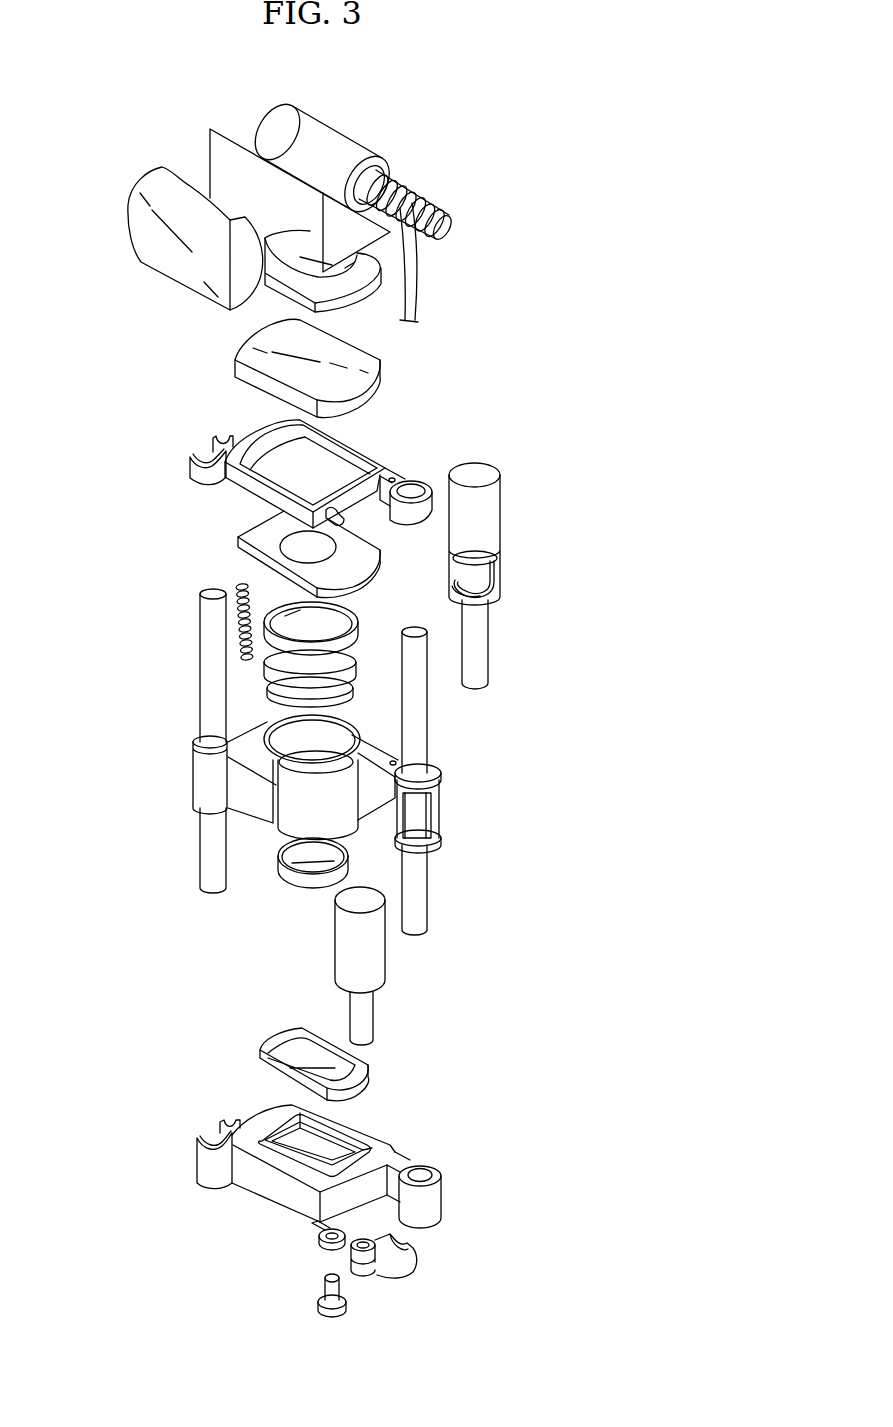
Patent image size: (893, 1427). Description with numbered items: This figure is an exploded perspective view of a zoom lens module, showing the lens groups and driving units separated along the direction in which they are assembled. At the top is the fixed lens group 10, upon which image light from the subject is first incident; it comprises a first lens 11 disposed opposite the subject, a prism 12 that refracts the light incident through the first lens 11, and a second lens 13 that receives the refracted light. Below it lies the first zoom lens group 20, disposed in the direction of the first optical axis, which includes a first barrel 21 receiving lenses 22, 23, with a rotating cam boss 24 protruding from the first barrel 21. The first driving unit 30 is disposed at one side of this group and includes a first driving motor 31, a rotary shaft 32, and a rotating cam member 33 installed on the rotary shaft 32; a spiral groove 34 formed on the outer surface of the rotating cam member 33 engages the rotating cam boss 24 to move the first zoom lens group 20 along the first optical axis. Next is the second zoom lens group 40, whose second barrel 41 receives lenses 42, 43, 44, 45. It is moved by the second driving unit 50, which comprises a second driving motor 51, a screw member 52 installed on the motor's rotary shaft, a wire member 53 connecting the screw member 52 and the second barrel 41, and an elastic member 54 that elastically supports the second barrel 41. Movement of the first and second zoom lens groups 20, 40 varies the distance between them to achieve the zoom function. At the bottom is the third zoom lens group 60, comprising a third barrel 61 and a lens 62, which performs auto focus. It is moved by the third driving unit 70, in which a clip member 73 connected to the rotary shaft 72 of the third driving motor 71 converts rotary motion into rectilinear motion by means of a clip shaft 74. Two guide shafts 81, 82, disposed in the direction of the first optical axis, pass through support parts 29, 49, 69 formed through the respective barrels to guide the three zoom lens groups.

The fixed lens group 10 is at (110, 194).
The first lens 11 is at (147, 243).
The prism 12 is at (217, 152).
The second lens 13 is at (355, 298).
The first zoom lens group 20 is at (455, 383).
The first barrel 21 is at (360, 447).
The lens 22 is at (237, 360).
The lens 23 is at (253, 540).
The rotating cam boss 24 is at (350, 517).
The support part 29 is at (420, 483).
The first driving unit 30 is at (522, 540).
The first driving motor 31 is at (497, 498).
The rotary shaft 32 is at (483, 642).
The rotating cam member 33 is at (497, 583).
The spiral groove 34 is at (457, 590).
The second zoom lens group 40 is at (235, 705).
The second barrel 41 is at (258, 840).
The lens 42 is at (347, 627).
The lens 43 is at (340, 667).
The lens 44 is at (347, 693).
The lens 45 is at (300, 882).
The support part 49 is at (200, 770).
The second driving unit 50 is at (389, 132).
The second driving motor 51 is at (324, 133).
The screw member 52 is at (435, 198).
The wire member 53 is at (415, 277).
The elastic member 54 is at (240, 583).
The third zoom lens group 60 is at (402, 1125).
The third barrel 61 is at (260, 1180).
The lens 62 is at (260, 1053).
The support part 69 is at (203, 1162).
The third driving unit 70 is at (310, 977).
The third driving motor 71 is at (383, 955).
The rotary shaft 72 is at (373, 1012).
The clip member 73 is at (410, 1263).
The clip shaft 74 is at (345, 1292).
The guide shaft 81 is at (210, 843).
The guide shaft 82 is at (427, 907).